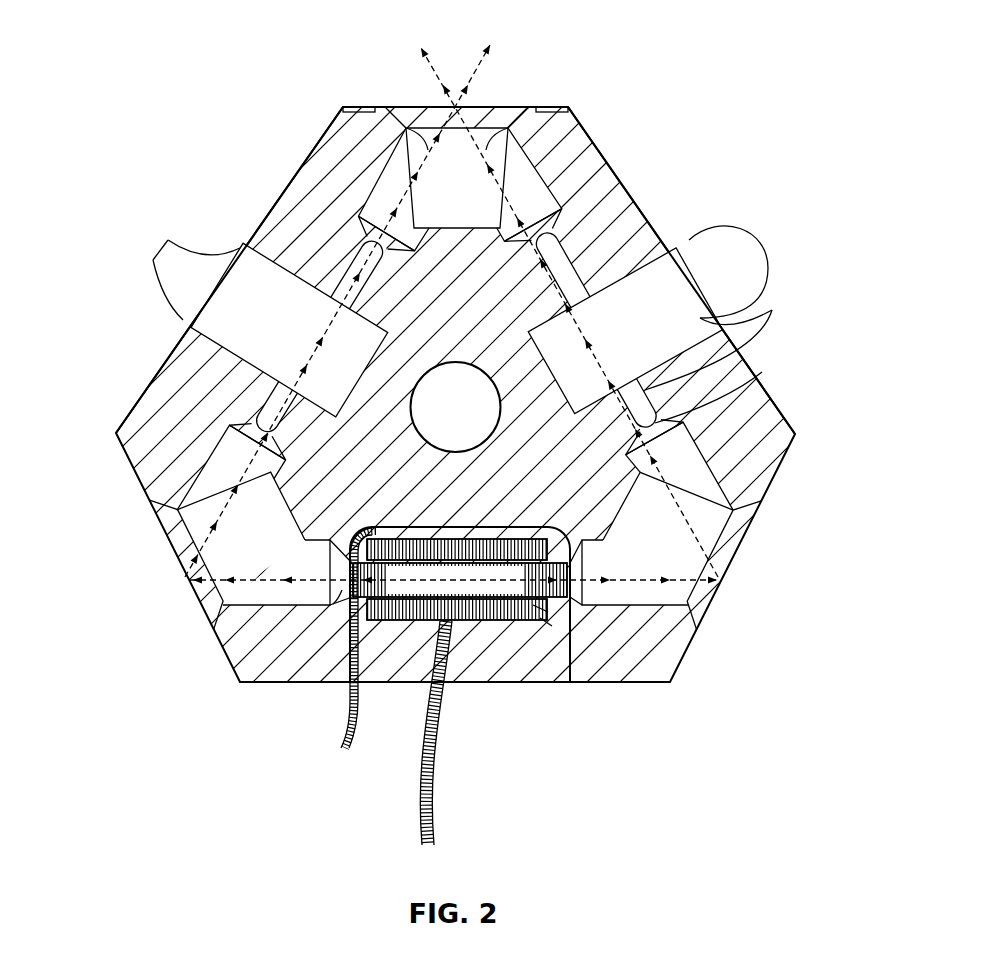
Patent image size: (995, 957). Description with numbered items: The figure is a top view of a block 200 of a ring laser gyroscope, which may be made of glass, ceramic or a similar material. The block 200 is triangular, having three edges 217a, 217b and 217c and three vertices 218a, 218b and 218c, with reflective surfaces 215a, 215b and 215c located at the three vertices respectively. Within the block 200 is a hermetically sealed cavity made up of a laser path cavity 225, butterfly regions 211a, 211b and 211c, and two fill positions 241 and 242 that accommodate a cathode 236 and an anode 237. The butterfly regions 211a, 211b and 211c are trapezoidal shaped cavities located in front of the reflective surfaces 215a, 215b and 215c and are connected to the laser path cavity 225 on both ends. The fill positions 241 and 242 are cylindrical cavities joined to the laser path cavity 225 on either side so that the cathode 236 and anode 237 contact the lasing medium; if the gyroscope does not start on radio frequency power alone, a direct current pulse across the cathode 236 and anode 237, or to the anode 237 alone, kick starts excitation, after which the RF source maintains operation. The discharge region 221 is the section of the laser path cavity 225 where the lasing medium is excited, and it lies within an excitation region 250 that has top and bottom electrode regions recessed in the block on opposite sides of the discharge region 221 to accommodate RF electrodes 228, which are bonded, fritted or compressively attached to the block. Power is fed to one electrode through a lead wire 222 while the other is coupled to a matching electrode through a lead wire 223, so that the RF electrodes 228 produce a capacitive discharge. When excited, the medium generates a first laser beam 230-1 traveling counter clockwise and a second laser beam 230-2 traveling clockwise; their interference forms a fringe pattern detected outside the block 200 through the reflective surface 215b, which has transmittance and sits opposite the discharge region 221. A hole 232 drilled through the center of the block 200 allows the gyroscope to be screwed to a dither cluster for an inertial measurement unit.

The block 200 is at (700, 133).
The butterfly region 211a is at (720, 488).
The butterfly region 211b is at (520, 106).
The butterfly region 211c is at (227, 562).
The reflective surface 215a is at (730, 548).
The reflective surface 215b is at (418, 116).
The reflective surface 215c is at (190, 553).
The edge 217a is at (628, 190).
The edge 217b is at (287, 188).
The edge 217c is at (240, 688).
The vertex 218a is at (690, 646).
The vertex 218b is at (568, 107).
The vertex 218c is at (143, 490).
The discharge region 221 is at (370, 600).
The lead wire 222 is at (436, 808).
The lead wire 223 is at (342, 750).
The laser path cavity 225 is at (718, 352).
The RF electrodes 228 is at (540, 618).
The first laser beam 230-1 is at (668, 400).
The second laser beam 230-2 is at (262, 410).
The hole 232 is at (457, 362).
The cathode 236 is at (718, 240).
The anode 237 is at (172, 257).
The fill position 241 is at (700, 317).
The fill position 242 is at (222, 325).
The excitation region 250 is at (485, 673).